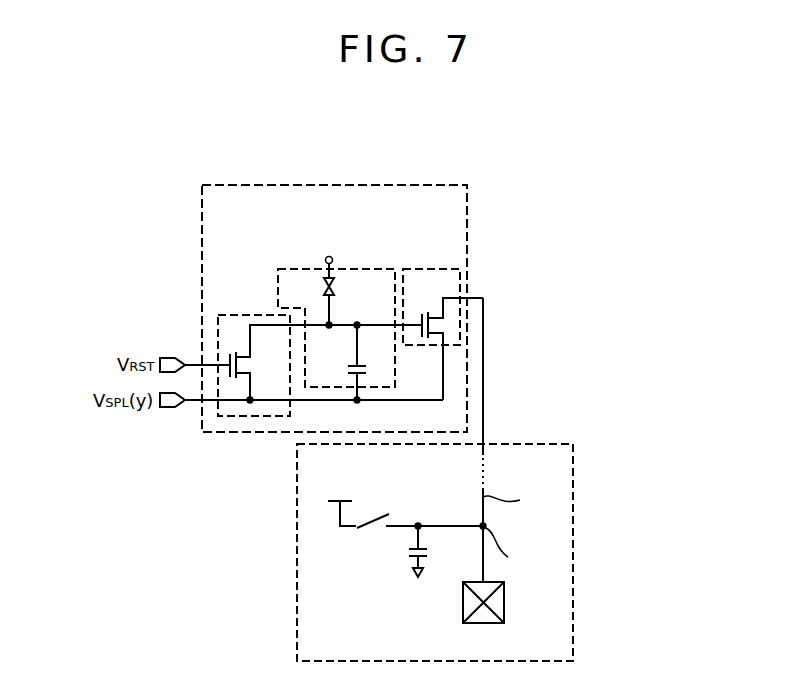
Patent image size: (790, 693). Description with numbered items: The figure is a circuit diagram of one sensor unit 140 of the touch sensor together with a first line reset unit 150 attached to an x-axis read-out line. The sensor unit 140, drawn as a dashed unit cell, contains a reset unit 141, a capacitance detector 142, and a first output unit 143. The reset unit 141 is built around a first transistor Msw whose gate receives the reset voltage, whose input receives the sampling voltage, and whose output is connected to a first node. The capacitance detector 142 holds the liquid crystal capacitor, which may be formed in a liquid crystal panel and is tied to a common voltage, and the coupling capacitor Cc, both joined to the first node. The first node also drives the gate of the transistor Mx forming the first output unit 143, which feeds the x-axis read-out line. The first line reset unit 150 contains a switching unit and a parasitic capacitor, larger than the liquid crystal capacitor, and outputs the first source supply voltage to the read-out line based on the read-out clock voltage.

The sensor unit 140 is at (467, 218).
The reset unit 141 is at (218, 332).
The capacitance detector 142 is at (278, 292).
The first output unit 143 is at (460, 279).
The first line reset unit 150 is at (573, 548).